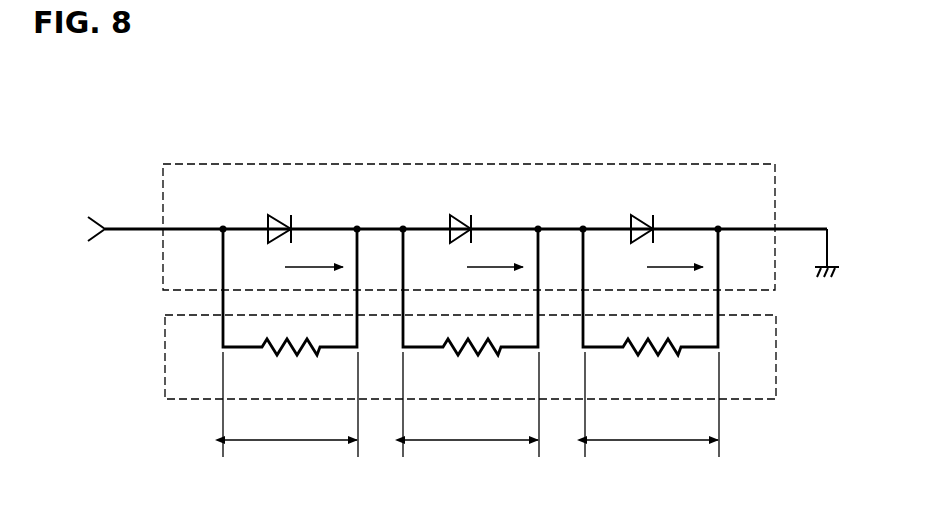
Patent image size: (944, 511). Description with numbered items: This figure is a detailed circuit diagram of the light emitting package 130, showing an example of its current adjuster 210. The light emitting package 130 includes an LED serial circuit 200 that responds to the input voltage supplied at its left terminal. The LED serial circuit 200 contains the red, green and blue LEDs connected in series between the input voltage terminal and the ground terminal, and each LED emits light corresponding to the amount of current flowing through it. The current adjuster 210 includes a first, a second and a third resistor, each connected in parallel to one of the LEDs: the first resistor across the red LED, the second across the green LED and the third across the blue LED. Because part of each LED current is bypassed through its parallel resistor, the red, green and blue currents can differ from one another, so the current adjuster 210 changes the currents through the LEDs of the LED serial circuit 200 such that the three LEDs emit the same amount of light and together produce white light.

The light emitting package 130 is at (92, 117).
The LED serial circuit 200 is at (776, 190).
The current adjuster 210 is at (776, 353).